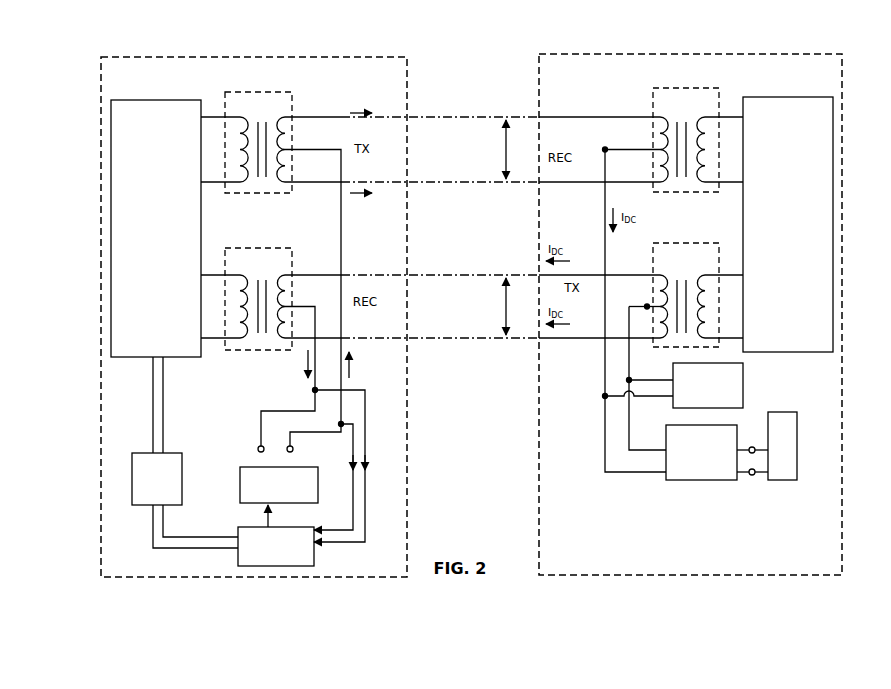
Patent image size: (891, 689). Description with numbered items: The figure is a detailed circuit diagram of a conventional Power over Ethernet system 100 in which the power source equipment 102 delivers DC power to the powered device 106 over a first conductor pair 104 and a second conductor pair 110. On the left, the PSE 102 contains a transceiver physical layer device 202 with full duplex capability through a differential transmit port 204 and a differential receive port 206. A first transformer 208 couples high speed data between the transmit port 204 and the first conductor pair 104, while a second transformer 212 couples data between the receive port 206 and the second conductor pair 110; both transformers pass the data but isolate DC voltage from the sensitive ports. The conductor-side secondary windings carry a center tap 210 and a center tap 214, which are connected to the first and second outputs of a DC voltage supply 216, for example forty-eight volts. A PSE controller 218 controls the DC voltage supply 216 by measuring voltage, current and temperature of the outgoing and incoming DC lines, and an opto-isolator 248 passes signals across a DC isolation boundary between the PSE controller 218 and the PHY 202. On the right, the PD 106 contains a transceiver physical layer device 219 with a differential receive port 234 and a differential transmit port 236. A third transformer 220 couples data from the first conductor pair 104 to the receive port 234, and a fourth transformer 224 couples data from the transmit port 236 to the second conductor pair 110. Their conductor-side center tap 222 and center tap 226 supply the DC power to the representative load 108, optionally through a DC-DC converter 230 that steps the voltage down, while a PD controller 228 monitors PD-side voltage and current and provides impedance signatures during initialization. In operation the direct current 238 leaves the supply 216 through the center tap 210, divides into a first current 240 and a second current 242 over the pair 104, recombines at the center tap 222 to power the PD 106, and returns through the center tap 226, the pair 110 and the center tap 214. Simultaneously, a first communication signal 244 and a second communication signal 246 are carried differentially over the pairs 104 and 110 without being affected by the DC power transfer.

The PoE system 100 is at (461, 84).
The power source equipment (PSE) 102 is at (240, 57).
The first conductor pair 104 is at (450, 165).
The powered device (PD) 106 is at (700, 54).
The load 108 is at (797, 432).
The second conductor pair 110 is at (450, 320).
The transceiver physical layer device (PHY) 202 is at (156, 228).
The differential transmit port 204 is at (201, 143).
The differential receive port 206 is at (201, 293).
The first transformer 208 is at (283, 142).
The center tap of first transformer 210 is at (314, 149).
The second transformer 212 is at (283, 299).
The center tap of second transformer 214 is at (300, 306).
The DC voltage supply 216 is at (240, 476).
The PSE controller 218 is at (250, 527).
The transceiver physical layer device 219 is at (788, 224).
The third transformer 220 is at (686, 140).
The center tap of third transformer 222 is at (605, 148).
The fourth transformer 224 is at (686, 295).
The center tap of fourth transformer 226 is at (647, 304).
The PD controller 228 is at (745, 380).
The DC-DC converter 230 is at (700, 480).
The differential receive port 234 is at (743, 138).
The differential transmit port 236 is at (743, 288).
The direct current (I_DC) 238 is at (321, 362).
The first current (I_1) 240 is at (350, 96).
The second current (I_2) 242 is at (367, 221).
The first communication signal 244 is at (505, 149).
The second communication signal 246 is at (505, 306).
The opto-isolator 248 is at (175, 453).